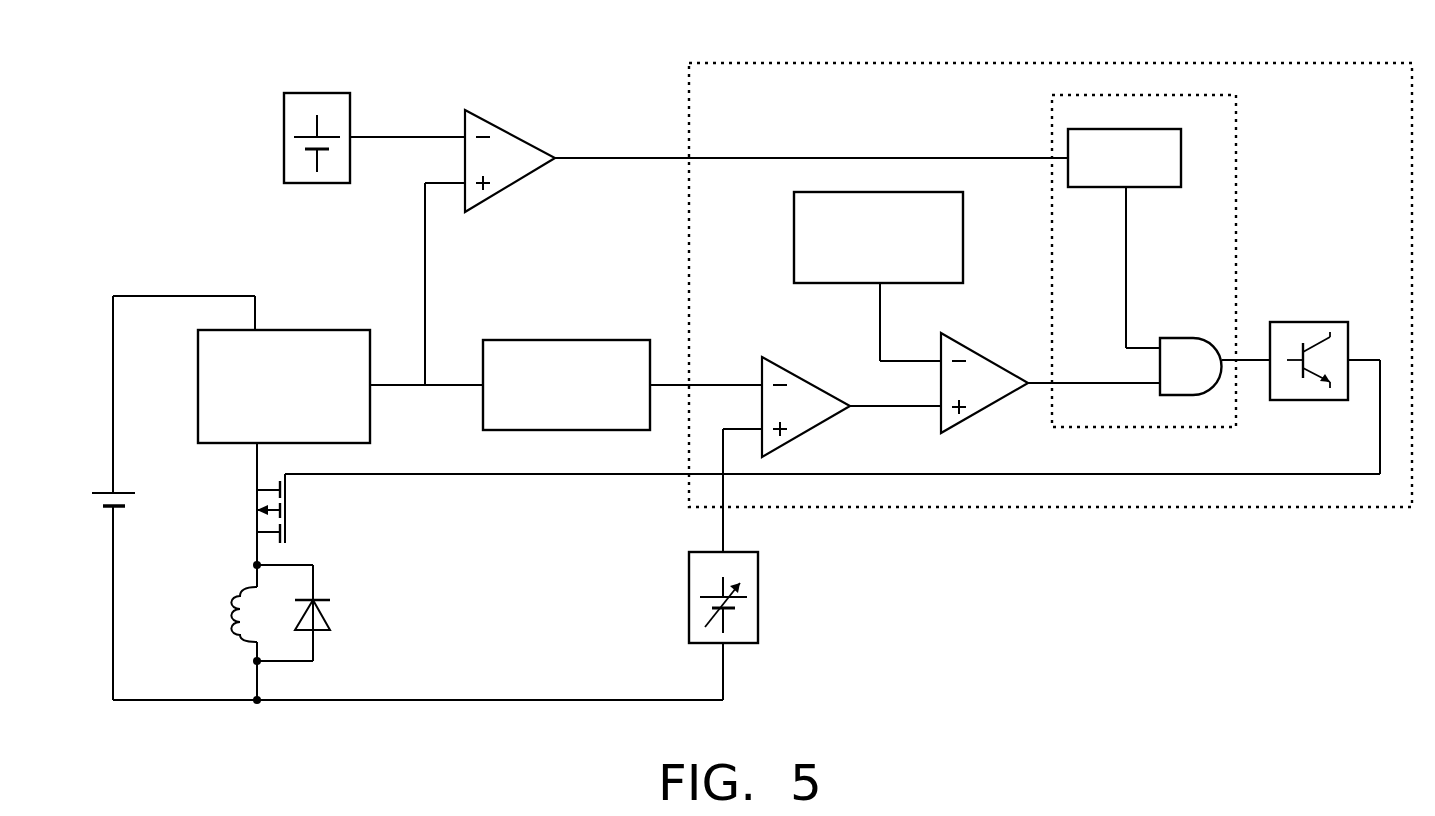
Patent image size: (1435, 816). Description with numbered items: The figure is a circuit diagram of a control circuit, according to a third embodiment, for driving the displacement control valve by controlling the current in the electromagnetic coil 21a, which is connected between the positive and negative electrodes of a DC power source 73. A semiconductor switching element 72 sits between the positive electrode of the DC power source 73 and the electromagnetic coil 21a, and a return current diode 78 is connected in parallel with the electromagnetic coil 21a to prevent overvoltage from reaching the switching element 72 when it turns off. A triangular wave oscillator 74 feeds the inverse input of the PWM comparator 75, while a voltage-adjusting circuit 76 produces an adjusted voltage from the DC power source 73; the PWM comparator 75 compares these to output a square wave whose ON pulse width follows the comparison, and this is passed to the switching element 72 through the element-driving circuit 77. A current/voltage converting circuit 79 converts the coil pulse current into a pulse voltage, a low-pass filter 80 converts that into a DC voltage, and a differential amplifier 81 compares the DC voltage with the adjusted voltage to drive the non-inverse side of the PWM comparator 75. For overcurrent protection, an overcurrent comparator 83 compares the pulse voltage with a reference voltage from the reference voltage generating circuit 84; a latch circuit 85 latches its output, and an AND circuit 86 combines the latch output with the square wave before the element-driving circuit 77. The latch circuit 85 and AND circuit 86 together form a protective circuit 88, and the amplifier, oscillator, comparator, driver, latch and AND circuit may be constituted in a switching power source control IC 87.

The electromagnetic coil 21a is at (228, 612).
The semiconductor switching element 72 is at (250, 515).
The DC power source 73 is at (103, 490).
The triangular wave oscillator 74 is at (963, 233).
The PWM comparator 75 is at (985, 352).
The voltage-adjusting circuit 76 is at (758, 595).
The element-driving circuit 77 is at (1308, 322).
The return current diode 78 is at (330, 615).
The current/voltage converting circuit 79 is at (310, 330).
The low-pass filter 80 is at (564, 340).
The differential amplifier 81 is at (803, 374).
The overcurrent comparator 83 is at (506, 130).
The reference voltage generating circuit 84 is at (315, 93).
The latch circuit 85 is at (1150, 187).
The AND circuit 86 is at (1180, 337).
The switching power source control IC 87 is at (1015, 508).
The protective circuit 88 is at (1237, 133).